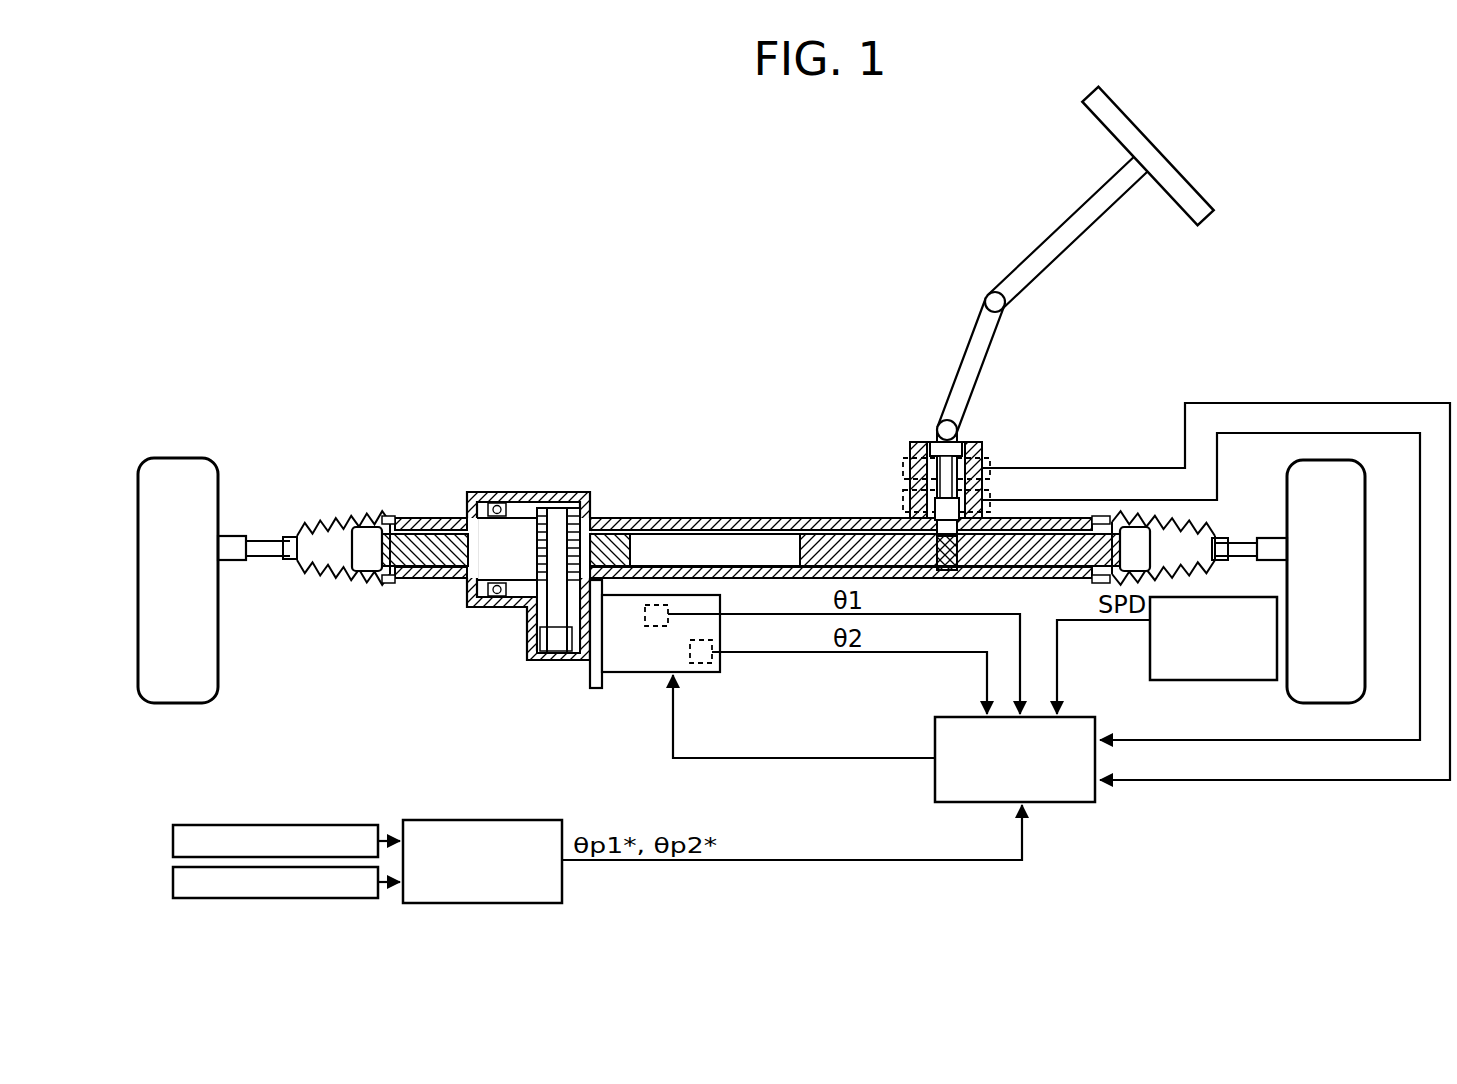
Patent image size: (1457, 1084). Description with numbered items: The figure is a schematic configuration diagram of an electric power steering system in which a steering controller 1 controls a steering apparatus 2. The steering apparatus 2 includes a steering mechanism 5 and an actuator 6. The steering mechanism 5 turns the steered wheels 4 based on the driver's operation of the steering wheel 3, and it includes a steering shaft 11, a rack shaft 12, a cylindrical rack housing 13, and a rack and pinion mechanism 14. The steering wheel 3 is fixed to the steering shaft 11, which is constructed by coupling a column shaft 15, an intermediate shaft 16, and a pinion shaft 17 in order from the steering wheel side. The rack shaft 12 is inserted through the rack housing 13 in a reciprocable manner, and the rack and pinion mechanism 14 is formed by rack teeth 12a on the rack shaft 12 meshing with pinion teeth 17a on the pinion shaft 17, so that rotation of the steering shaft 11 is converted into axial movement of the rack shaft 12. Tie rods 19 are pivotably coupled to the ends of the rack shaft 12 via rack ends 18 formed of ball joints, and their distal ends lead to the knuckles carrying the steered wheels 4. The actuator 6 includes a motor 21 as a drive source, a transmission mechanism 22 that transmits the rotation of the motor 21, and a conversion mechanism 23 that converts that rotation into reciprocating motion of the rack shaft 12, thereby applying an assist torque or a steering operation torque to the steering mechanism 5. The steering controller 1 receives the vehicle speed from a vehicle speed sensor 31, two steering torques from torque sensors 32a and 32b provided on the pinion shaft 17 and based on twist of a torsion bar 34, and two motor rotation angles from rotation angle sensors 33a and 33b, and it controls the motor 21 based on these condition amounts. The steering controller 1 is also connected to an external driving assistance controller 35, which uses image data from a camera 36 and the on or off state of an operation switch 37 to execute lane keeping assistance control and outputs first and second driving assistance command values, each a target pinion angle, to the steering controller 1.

The steering controller 1 is at (1060, 805).
The steering apparatus 2 is at (496, 243).
The steering wheel 3 is at (1132, 115).
The steered wheels 4 is at (138, 642).
The steering mechanism 5 is at (604, 460).
The actuator 6 is at (451, 712).
The steering shaft 11 is at (1005, 298).
The rack shaft 12 is at (751, 546).
The rack teeth 12a is at (903, 568).
The rack housing 13 is at (689, 519).
The rack and pinion mechanism 14 is at (984, 576).
The column shaft 15 is at (1040, 233).
The intermediate shaft 16 is at (963, 357).
The pinion shaft 17 is at (931, 509).
The pinion teeth 17a is at (951, 572).
The rack ends 18 is at (362, 575).
The tie rods 19 is at (258, 535).
The motor 21 is at (622, 680).
The transmission mechanism 22 is at (540, 658).
The conversion mechanism 23 is at (476, 608).
The vehicle speed sensor 31 is at (1214, 681).
The torque sensor 32a is at (903, 467).
The torque sensor 32b is at (903, 500).
The rotation angle sensor 33a is at (656, 627).
The rotation angle sensor 33b is at (700, 664).
The torsion bar 34 is at (978, 446).
The driving assistance controller 35 is at (480, 818).
The camera 36 is at (302, 825).
The operation switch 37 is at (299, 898).